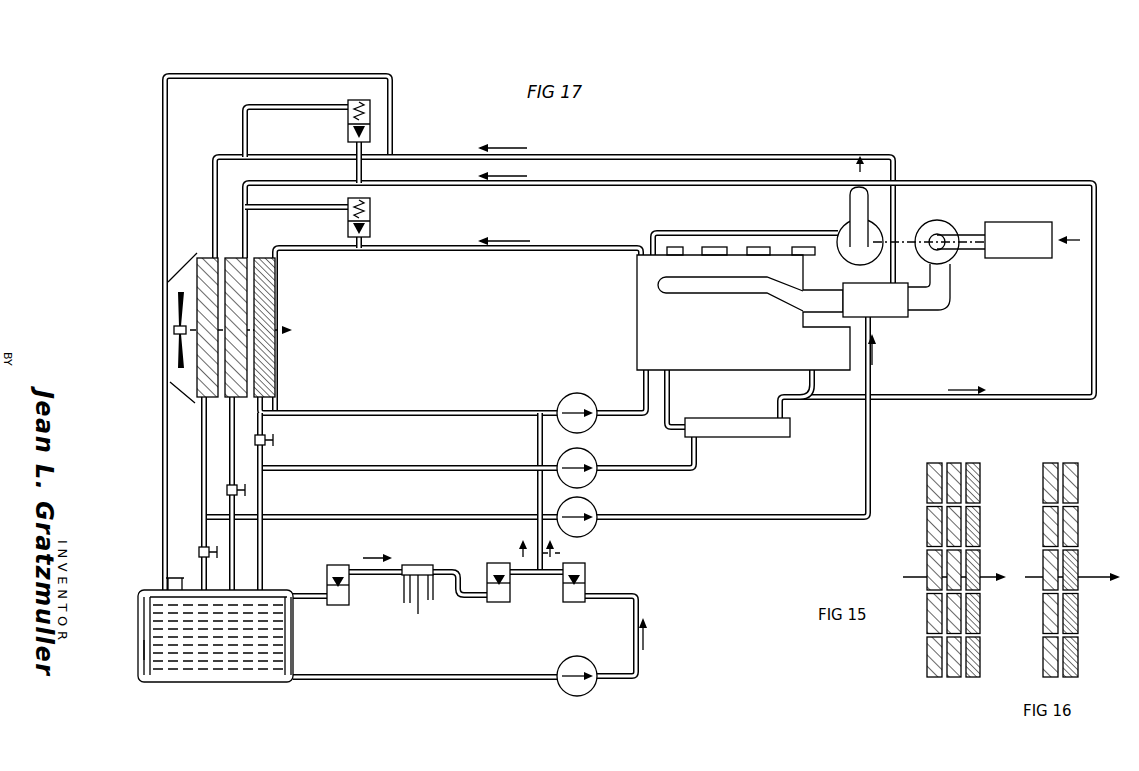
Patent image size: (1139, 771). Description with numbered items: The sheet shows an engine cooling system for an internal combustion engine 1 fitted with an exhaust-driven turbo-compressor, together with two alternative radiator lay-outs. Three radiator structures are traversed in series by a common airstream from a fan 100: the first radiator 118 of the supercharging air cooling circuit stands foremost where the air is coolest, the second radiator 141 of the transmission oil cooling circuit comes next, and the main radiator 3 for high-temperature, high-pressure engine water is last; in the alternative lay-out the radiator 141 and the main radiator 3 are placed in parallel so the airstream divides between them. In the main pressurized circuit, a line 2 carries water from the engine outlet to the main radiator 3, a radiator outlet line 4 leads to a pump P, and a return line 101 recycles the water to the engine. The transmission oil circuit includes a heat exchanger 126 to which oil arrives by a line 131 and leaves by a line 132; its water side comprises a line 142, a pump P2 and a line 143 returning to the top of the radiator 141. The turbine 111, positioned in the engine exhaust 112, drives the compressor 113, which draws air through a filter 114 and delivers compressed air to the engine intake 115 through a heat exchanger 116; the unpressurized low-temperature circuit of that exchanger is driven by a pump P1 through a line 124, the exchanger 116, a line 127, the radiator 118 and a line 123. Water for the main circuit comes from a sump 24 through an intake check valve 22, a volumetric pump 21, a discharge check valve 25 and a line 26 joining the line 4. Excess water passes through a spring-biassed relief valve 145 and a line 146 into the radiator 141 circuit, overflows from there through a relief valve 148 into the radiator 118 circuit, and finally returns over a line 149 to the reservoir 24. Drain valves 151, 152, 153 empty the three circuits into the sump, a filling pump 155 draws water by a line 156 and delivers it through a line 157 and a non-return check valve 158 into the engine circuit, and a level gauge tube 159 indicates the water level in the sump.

In FIG. 17, the internal combustion engine 1 is at (638, 357).
In FIG. 17, the line 2 is at (588, 248).
In FIG. 17, the main radiator 3 is at (266, 348).
In FIG. 15, the main radiator 3 is at (974, 572).
In FIG. 16, the main radiator 3 is at (1078, 622).
In FIG. 17, the radiator outlet line 4 is at (268, 411).
In FIG. 17, the volumetric pump 21 is at (424, 604).
In FIG. 17, the intake check valve 22 is at (345, 604).
In FIG. 17, the sump or reservoir 24 is at (168, 600).
In FIG. 17, the discharge check valve 25 is at (503, 603).
In FIG. 17, the line 26 is at (536, 492).
In FIG. 17, the fan 100 is at (223, 328).
In FIG. 17, the return line 101 is at (646, 420).
In FIG. 17, the turbine 111 is at (880, 228).
In FIG. 17, the engine exhaust 112 is at (810, 220).
In FIG. 17, the compressor 113 is at (932, 226).
In FIG. 17, the filter 114 is at (1030, 224).
In FIG. 17, the engine intake 115 is at (718, 296).
In FIG. 17, the heat exchanger 116 is at (890, 272).
In FIG. 17, the first radiator 118 is at (208, 292).
In FIG. 15, the first radiator 118 is at (926, 534).
In FIG. 16, the first radiator 118 is at (1042, 528).
In FIG. 17, the line 123 is at (206, 478).
In FIG. 17, the line 124 is at (736, 520).
In FIG. 17, the heat exchanger 126 is at (756, 420).
In FIG. 17, the line 127 is at (748, 156).
In FIG. 17, the line 131 is at (668, 372).
In FIG. 17, the line 132 is at (820, 372).
In FIG. 17, the second radiator 141 is at (238, 318).
In FIG. 15, the second radiator 141 is at (966, 448).
In FIG. 16, the second radiator 141 is at (1086, 448).
In FIG. 17, the line 142 is at (226, 425).
In FIG. 17, the line 143 is at (1052, 396).
In FIG. 17, the relief valve 145 is at (348, 226).
In FIG. 17, the line 146 is at (318, 207).
In FIG. 17, the relief valve 148 is at (348, 124).
In FIG. 17, the line 149 is at (178, 492).
In FIG. 17, the drain valve 151 is at (274, 446).
In FIG. 17, the drain valve 152 is at (246, 492).
In FIG. 17, the drain valve 153 is at (218, 554).
In FIG. 17, the filling pump 155 is at (595, 640).
In FIG. 17, the line 156 is at (508, 676).
In FIG. 17, the line 157 is at (640, 656).
In FIG. 17, the non-return check valve 158 is at (586, 580).
In FIG. 17, the level gauge tube 159 is at (144, 663).
In FIG. 17, the pump P is at (562, 402).
In FIG. 17, the pump P1 is at (590, 508).
In FIG. 17, the pump P2 is at (570, 454).